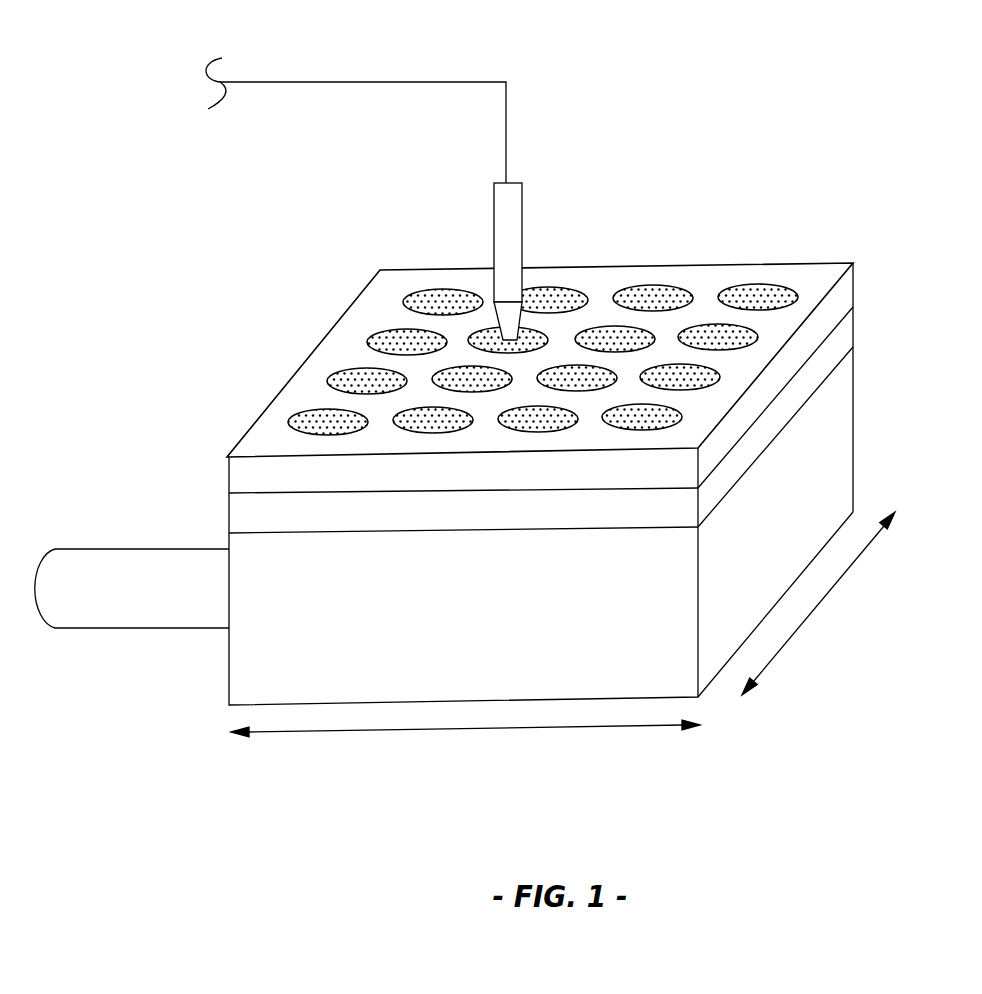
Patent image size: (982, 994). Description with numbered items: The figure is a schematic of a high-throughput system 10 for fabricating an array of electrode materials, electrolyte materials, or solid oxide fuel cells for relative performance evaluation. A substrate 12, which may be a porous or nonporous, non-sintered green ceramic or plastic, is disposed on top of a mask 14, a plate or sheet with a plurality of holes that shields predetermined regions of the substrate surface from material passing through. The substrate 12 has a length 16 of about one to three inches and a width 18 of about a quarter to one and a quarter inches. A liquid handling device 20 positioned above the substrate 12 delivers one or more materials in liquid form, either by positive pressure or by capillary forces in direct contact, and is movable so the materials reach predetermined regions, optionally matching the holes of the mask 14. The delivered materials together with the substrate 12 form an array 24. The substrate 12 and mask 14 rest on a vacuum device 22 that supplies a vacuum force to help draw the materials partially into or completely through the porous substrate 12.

The system 10 is at (495, 361).
The substrate 12 is at (853, 265).
The mask 14 is at (853, 307).
The length 16 is at (650, 725).
The width 18 is at (818, 603).
The liquid handling device 20 is at (508, 217).
The vacuum device 22 is at (842, 432).
The array 24 is at (603, 285).